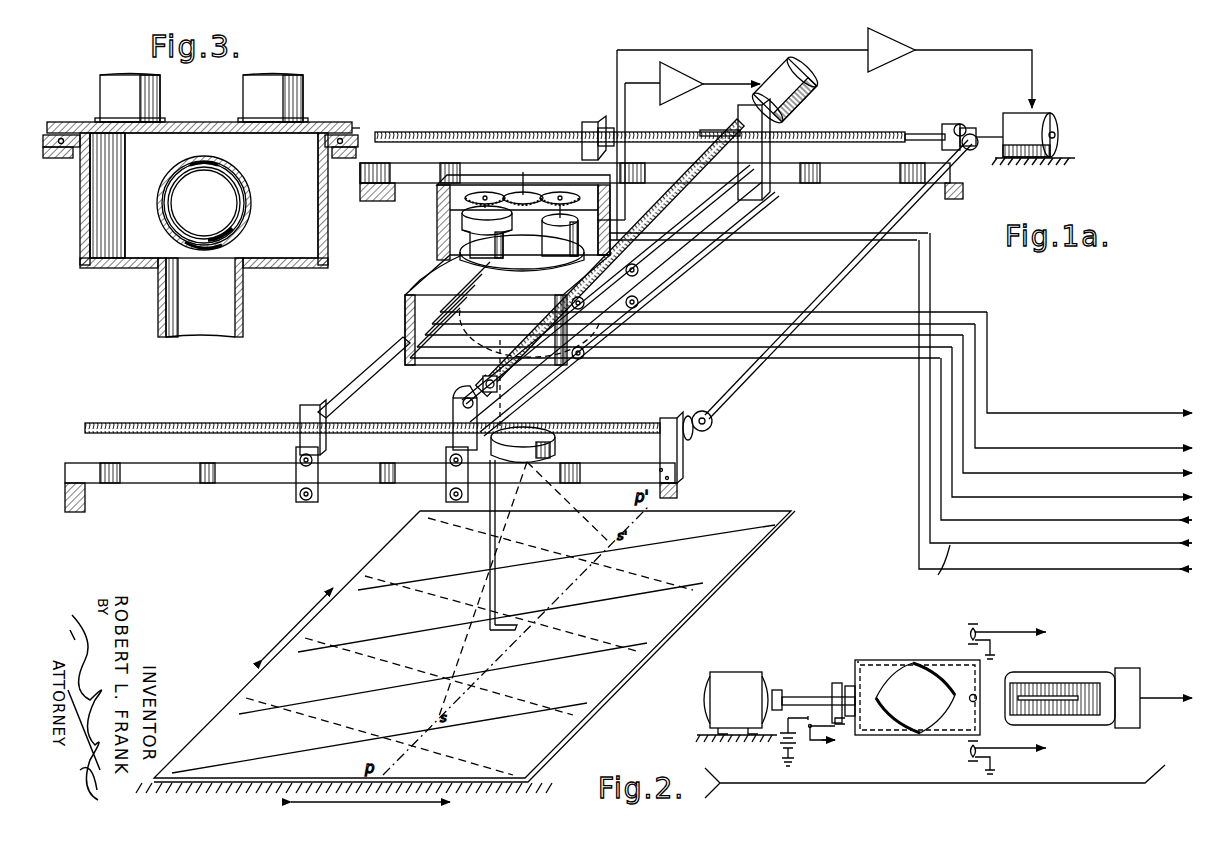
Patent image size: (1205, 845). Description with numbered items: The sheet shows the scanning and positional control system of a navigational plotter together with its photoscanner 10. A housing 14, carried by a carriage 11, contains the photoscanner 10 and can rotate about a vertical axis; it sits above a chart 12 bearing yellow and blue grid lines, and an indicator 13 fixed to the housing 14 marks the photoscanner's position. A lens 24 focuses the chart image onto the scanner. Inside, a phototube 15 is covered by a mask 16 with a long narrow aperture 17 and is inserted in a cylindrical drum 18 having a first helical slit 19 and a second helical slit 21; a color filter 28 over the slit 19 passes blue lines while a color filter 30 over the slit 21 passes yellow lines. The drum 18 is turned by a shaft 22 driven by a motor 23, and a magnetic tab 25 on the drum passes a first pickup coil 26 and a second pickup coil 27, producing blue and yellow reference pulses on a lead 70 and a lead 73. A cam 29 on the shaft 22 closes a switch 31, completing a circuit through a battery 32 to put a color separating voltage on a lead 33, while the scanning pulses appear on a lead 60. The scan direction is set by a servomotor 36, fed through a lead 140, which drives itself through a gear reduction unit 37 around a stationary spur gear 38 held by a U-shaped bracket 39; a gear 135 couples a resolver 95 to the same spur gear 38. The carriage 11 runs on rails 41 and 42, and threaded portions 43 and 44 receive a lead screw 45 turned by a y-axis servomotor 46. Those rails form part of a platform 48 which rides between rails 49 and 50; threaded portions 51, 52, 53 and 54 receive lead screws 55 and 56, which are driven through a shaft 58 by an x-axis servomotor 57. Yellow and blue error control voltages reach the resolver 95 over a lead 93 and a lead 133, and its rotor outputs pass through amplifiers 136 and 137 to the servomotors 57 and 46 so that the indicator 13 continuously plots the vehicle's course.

In FIG. 3, the photoscanner 10 is at (204, 195).
In FIG. 2, the photoscanner 10 is at (897, 648).
In FIG. 3, the carriage 11 is at (356, 128).
In FIG. 1A, the carriage 11 is at (395, 312).
In FIG. 1A, the chart 12 is at (735, 560).
In FIG. 1A, the indicator 13 is at (497, 622).
In FIG. 3, the housing 14 is at (125, 260).
In FIG. 1A, the housing 14 is at (415, 287).
In FIG. 3, the phototube 15 is at (248, 190).
In FIG. 2, the phototube 15 is at (1128, 668).
In FIG. 2, the mask 16 is at (1065, 683).
In FIG. 2, the aperture 17 is at (1075, 698).
In FIG. 3, the cylindrical drum 18 is at (243, 205).
In FIG. 2, the cylindrical drum 18 is at (868, 660).
In FIG. 3, the first helical slit 19 is at (220, 178).
In FIG. 2, the first helical slit 19 is at (890, 680).
In FIG. 3, the second helical slit 21 is at (222, 236).
In FIG. 2, the second helical slit 21 is at (905, 730).
In FIG. 2, the shaft 22 is at (800, 697).
In FIG. 2, the motor 23 is at (735, 672).
In FIG. 1A, the lens 24 is at (555, 445).
In FIG. 2, the magnetic tab 25 is at (977, 698).
In FIG. 2, the first pickup coil 26 is at (968, 630).
In FIG. 2, the second pickup coil 27 is at (965, 752).
In FIG. 3, the color filter 28 is at (200, 163).
In FIG. 2, the cam 29 is at (837, 683).
In FIG. 3, the color filter 30 is at (210, 245).
In FIG. 2, the switch 31 is at (838, 724).
In FIG. 2, the battery 32 is at (775, 755).
In FIG. 1A, the lead 33 is at (1040, 448).
In FIG. 2, the lead 33 is at (815, 742).
In FIG. 3, the servomotor 36 is at (100, 95).
In FIG. 1A, the servomotor 36 is at (462, 245).
In FIG. 1A, the gear reduction unit 37 is at (437, 205).
In FIG. 1A, the spur gear 38 is at (510, 190).
In FIG. 1A, the U-shaped bracket 39 is at (437, 222).
In FIG. 1A, the rail 41 is at (665, 262).
In FIG. 1A, the rail 42 is at (360, 375).
In FIG. 1A, the threaded portion 43 is at (630, 292).
In FIG. 1A, the threaded portion 44 is at (640, 215).
In FIG. 1A, the lead screw 45 is at (700, 233).
In FIG. 1A, the y-axis servomotor 46 is at (812, 92).
In FIG. 1A, the platform 48 is at (365, 478).
In FIG. 1A, the rail 49 is at (200, 485).
In FIG. 1A, the rail 50 is at (830, 183).
In FIG. 1A, the threaded portion 51 is at (453, 420).
In FIG. 1A, the threaded portion 52 is at (305, 405).
In FIG. 1A, the threaded portion 53 is at (738, 118).
In FIG. 1A, the threaded portion 54 is at (590, 122).
In FIG. 1A, the lead screw 55 is at (630, 422).
In FIG. 1A, the lead screw 56 is at (895, 132).
In FIG. 1A, the x-axis servomotor 57 is at (1050, 110).
In FIG. 1A, the shaft 58 is at (920, 185).
In FIG. 1A, the lead 60 is at (1048, 410).
In FIG. 2, the lead 60 is at (1160, 690).
In FIG. 1A, the lead 70 is at (952, 482).
In FIG. 2, the lead 70 is at (1020, 630).
In FIG. 1A, the lead 73 is at (963, 440).
In FIG. 2, the lead 73 is at (1025, 750).
In FIG. 1A, the lead 93 is at (1145, 570).
In FIG. 3, the resolver 95 is at (303, 98).
In FIG. 1A, the resolver 95 is at (540, 270).
In FIG. 1A, the lead 133 is at (1082, 550).
In FIG. 1A, the gear 135 is at (555, 190).
In FIG. 1A, the amplifier 136 is at (915, 38).
In FIG. 1A, the amplifier 137 is at (695, 45).
In FIG. 1A, the lead 140 is at (941, 513).